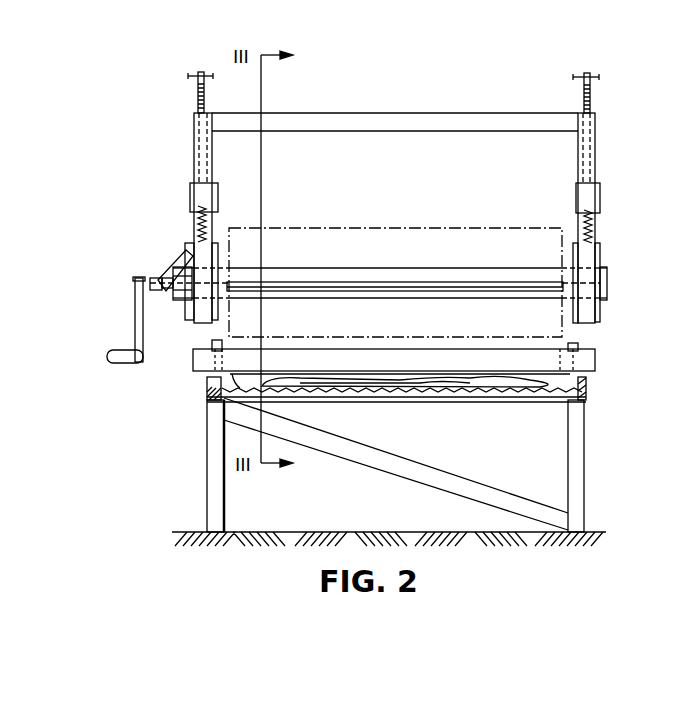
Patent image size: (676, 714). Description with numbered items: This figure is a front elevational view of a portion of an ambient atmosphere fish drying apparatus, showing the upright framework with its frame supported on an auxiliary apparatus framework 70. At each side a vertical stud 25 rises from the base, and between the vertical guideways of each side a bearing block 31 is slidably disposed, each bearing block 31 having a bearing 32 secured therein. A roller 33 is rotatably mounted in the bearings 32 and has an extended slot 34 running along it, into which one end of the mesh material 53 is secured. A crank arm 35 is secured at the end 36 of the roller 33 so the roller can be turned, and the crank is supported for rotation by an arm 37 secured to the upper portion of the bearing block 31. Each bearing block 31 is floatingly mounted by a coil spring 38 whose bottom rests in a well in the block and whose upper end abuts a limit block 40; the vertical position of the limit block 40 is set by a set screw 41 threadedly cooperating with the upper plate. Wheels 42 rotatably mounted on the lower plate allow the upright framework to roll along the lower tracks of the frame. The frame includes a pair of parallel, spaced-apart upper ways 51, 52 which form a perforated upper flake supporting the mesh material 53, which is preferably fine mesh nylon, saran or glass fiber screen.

The vertical stud 25 is at (194, 145).
The bearing block 31 is at (185, 244).
The bearing 32 is at (222, 262).
The roller 33 is at (357, 272).
The extended slot 34 is at (407, 287).
The crank arm 35 is at (135, 331).
The end of the roller 36 is at (178, 300).
The arm 37 is at (172, 262).
The coil spring 38 is at (194, 226).
The limit block 40 is at (190, 196).
The set screw 41 is at (200, 72).
The wheel 42 is at (212, 341).
The upper way 51 is at (586, 392).
The upper way 52 is at (207, 392).
The mesh material 53 is at (470, 392).
The auxiliary apparatus framework 70 is at (418, 458).